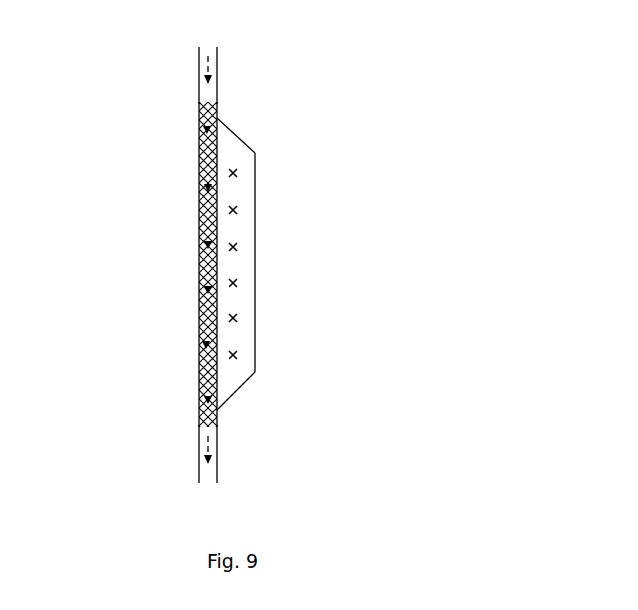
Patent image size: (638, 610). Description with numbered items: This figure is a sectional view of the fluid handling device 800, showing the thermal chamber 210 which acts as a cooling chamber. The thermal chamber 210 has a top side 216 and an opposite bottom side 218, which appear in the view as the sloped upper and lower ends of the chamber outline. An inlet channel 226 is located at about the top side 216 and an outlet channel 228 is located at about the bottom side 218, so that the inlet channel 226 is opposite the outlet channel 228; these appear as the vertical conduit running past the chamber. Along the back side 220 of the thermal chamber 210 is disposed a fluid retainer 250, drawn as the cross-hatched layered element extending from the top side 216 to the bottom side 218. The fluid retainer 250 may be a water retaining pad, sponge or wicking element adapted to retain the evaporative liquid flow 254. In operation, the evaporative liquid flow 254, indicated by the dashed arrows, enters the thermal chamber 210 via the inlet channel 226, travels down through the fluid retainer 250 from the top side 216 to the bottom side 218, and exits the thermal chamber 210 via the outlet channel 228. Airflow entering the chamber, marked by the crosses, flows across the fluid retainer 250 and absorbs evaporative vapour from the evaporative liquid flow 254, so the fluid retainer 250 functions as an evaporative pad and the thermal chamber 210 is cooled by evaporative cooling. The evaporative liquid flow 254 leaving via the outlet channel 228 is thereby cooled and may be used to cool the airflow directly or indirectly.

The fluid handling device 800 is at (535, 35).
The thermal chamber 210 is at (250, 230).
The top side 216 is at (227, 125).
The bottom side 218 is at (228, 406).
The back side 220 is at (199, 192).
The inlet channel 226 is at (217, 93).
The outlet channel 228 is at (217, 450).
The fluid retainer 250 is at (205, 270).
The evaporative liquid flow 254 is at (199, 79).